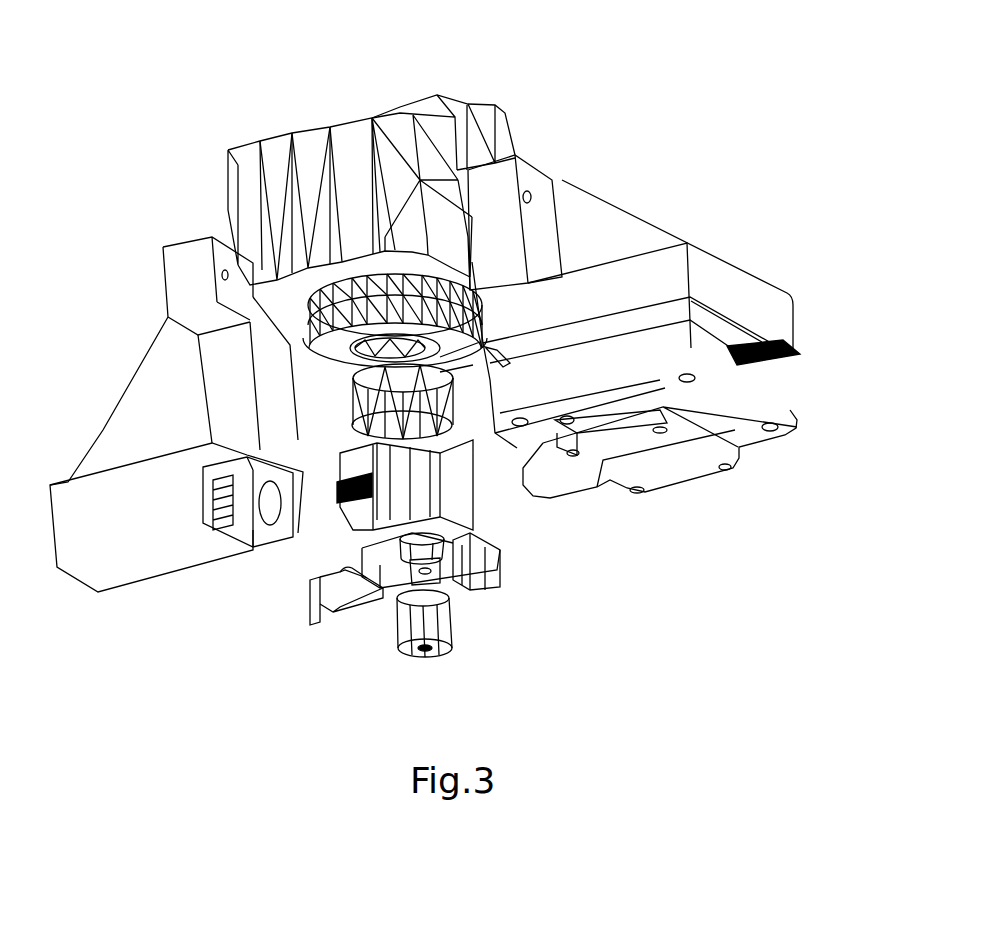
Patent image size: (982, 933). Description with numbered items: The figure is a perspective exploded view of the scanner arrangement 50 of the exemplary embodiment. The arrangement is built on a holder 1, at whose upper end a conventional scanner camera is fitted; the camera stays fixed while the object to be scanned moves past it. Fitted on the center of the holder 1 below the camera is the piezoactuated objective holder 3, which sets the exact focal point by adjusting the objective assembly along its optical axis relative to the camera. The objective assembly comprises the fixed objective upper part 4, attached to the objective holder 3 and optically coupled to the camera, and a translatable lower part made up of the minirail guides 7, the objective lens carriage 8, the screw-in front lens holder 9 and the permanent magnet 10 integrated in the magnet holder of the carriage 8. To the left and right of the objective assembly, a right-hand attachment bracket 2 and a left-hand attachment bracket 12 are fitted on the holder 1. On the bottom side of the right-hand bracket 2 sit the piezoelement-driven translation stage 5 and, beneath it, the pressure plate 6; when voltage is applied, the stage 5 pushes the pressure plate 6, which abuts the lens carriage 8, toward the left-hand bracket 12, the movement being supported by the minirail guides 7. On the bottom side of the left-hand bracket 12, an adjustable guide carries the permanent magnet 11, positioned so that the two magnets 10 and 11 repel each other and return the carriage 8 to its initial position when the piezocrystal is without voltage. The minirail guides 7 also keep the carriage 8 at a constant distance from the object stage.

The scanner arrangement 50 is at (553, 133).
The holder 1 is at (465, 156).
The right-hand attachment bracket 2 is at (562, 233).
The piezoactuated objective holder 3 is at (435, 288).
The objective upper part 4 is at (440, 390).
The translation stage 5 is at (643, 393).
The pressure plate 6 is at (620, 437).
The minirail guides 7 is at (340, 486).
The objective lens carriage 8 is at (500, 565).
The front lens holder 9 is at (417, 543).
The permanent magnet 10 is at (313, 600).
The permanent magnet 11 is at (272, 505).
The left-hand attachment bracket 12 is at (143, 435).